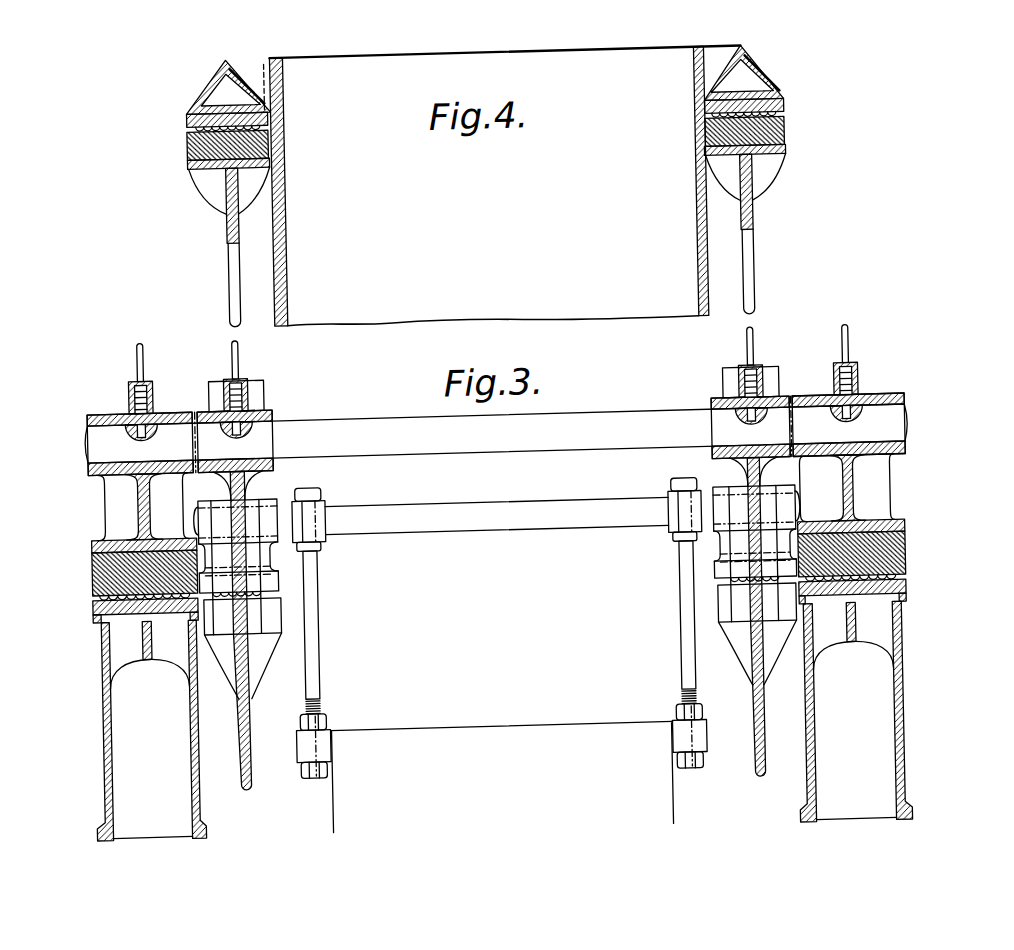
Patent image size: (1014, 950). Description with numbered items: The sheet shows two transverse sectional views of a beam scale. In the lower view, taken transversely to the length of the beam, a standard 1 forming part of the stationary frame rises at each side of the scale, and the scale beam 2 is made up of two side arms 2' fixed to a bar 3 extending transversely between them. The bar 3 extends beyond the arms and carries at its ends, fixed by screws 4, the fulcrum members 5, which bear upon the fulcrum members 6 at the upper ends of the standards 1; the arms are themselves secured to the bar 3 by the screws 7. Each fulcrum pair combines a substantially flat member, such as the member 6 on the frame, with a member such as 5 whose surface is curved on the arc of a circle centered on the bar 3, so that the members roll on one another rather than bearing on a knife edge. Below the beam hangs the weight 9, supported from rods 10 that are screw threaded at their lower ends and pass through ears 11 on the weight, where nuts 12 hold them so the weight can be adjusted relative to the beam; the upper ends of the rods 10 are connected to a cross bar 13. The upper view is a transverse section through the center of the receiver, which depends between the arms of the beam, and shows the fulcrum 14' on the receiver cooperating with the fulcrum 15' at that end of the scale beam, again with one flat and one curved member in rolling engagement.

In FIG. 3, the standard 1 is at (101, 766).
In FIG. 3, the scale beam 2 is at (499, 593).
In FIG. 3, the side arm 2' is at (493, 389).
In FIG. 3, the bar 3 is at (339, 418).
In FIG. 3, the screw 4 is at (136, 398).
In FIG. 3, the fulcrum member 5 is at (127, 503).
In FIG. 3, the fulcrum member 6 is at (98, 597).
In FIG. 3, the screw 7 is at (251, 393).
In FIG. 3, the weight 9 is at (503, 776).
In FIG. 3, the rod 10 is at (322, 655).
In FIG. 3, the ear 11 is at (323, 735).
In FIG. 3, the nut 12 is at (300, 717).
In FIG. 3, the cross bar 13 is at (426, 520).
In FIG. 4, the fulcrum member 14' is at (485, 105).
In FIG. 4, the fulcrum member 15' is at (486, 141).